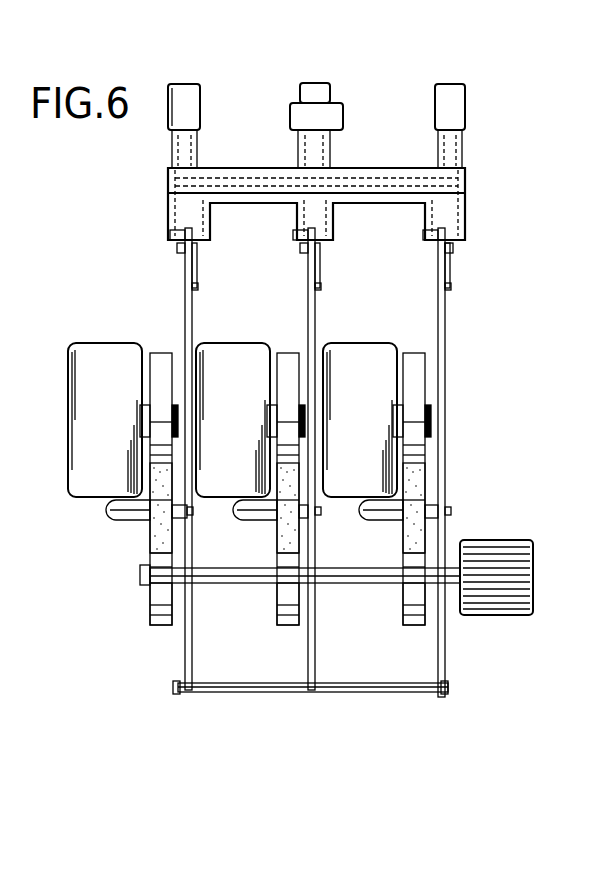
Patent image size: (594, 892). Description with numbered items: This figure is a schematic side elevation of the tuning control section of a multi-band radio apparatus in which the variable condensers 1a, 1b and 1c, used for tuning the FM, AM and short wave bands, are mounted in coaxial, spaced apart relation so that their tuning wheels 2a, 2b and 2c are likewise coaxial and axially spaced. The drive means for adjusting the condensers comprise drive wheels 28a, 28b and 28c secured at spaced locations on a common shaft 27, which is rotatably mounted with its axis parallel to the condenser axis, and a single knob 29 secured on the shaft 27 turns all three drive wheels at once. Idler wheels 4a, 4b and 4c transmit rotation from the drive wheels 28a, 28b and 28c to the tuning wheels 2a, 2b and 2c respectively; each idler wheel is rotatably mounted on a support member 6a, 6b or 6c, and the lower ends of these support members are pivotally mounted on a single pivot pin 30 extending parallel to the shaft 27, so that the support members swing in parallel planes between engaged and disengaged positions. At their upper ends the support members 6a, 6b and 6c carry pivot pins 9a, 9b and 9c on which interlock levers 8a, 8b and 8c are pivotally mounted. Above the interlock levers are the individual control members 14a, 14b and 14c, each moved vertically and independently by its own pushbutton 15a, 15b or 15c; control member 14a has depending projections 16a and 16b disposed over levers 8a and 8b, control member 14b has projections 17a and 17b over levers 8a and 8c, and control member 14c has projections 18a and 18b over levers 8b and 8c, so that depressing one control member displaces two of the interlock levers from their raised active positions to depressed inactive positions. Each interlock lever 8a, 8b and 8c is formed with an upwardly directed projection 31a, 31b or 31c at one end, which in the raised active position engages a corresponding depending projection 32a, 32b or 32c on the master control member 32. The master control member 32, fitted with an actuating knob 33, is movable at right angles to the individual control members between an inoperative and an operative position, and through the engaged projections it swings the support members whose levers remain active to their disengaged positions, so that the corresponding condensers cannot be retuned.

The variable condenser 1a is at (98, 352).
The variable condenser 1b is at (227, 352).
The variable condenser 1c is at (355, 352).
The tuning wheel 2a is at (160, 352).
The tuning wheel 2b is at (289, 352).
The tuning wheel 2c is at (415, 352).
The idler wheel 4a is at (150, 546).
The idler wheel 4b is at (277, 546).
The idler wheel 4c is at (403, 546).
The support member 6a is at (197, 541).
The support member 6b is at (315, 543).
The support member 6c is at (446, 466).
The interlock lever 8a is at (198, 287).
The interlock lever 8b is at (321, 287).
The interlock lever 8c is at (451, 287).
The pivot pin 9a is at (197, 255).
The pivot pin 9b is at (320, 255).
The pivot pin 9c is at (450, 255).
The individual control member 14a is at (452, 156).
The individual control member 14b is at (328, 154).
The individual control member 14c is at (190, 156).
The pushbutton 15a is at (449, 92).
The pushbutton 15b is at (314, 92).
The pushbutton 15c is at (186, 92).
The depending projection 16a is at (210, 221).
The depending projection 16b is at (333, 221).
The depending projection 17a is at (197, 248).
The depending projection 17b is at (456, 222).
The depending projection 18a is at (320, 248).
The depending projection 18b is at (455, 248).
The common shaft 27 is at (220, 582).
The drive wheel 28a is at (150, 603).
The drive wheel 28b is at (277, 603).
The drive wheel 28c is at (410, 603).
The knob 29 is at (525, 553).
The pivot pin 30 is at (228, 683).
The upwardly directed projection 31a is at (172, 237).
The upwardly directed projection 31b is at (300, 240).
The upwardly directed projection 31c is at (434, 240).
The master control member 32 is at (168, 190).
The depending projection 32a is at (172, 214).
The depending projection 32b is at (300, 232).
The depending projection 32c is at (466, 206).
The actuating knob 33 is at (343, 107).